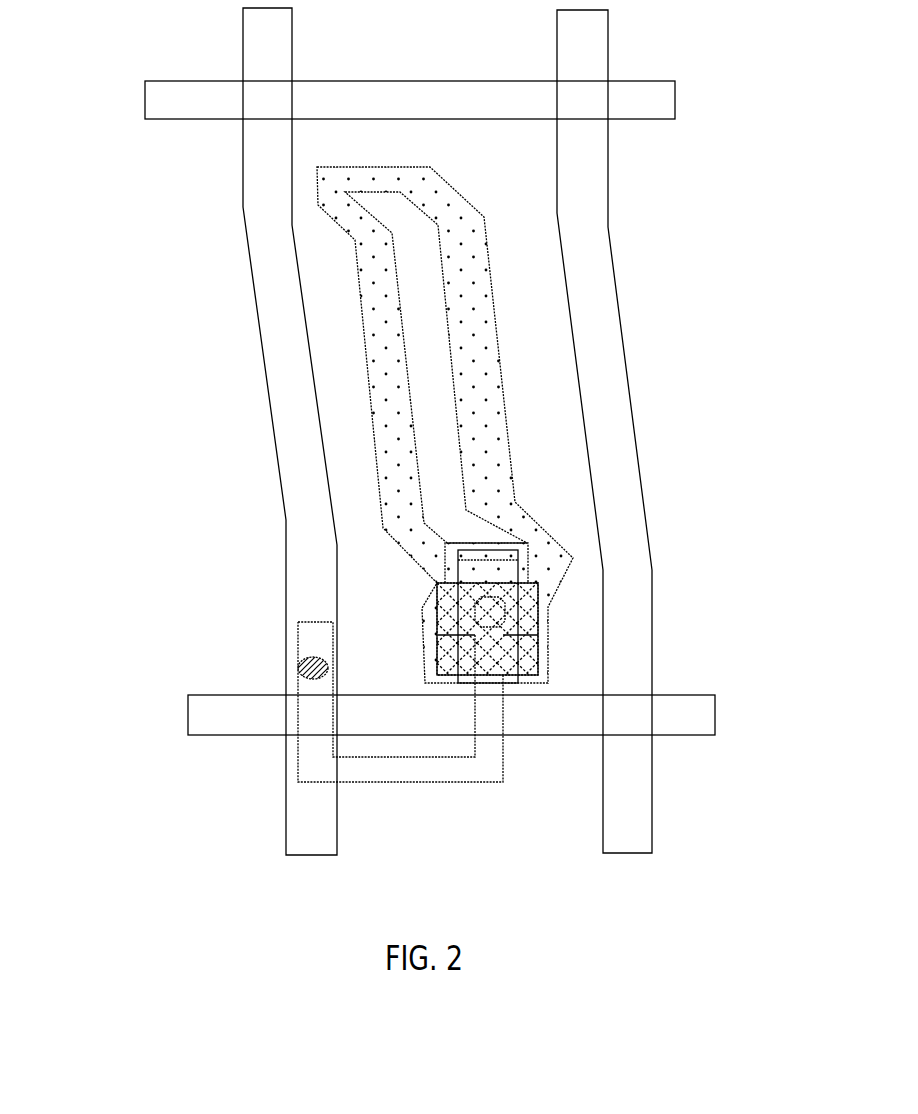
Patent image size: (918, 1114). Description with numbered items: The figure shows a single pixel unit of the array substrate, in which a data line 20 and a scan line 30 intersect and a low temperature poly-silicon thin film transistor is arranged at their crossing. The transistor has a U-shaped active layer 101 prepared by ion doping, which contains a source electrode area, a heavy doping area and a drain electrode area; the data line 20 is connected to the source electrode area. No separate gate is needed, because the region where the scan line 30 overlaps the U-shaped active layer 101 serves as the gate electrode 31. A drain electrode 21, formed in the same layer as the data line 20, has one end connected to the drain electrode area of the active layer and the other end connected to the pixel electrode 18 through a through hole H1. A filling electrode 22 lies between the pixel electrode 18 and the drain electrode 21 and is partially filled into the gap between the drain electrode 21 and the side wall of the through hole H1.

The pixel electrode 18 is at (490, 447).
The data line 20 is at (612, 573).
The drain electrode 21 is at (500, 572).
The filling electrode 22 is at (435, 583).
The scan line 30 is at (665, 717).
The gate electrode 31 is at (487, 710).
The U-shaped active layer 101 is at (382, 770).
The through hole H1 is at (433, 545).